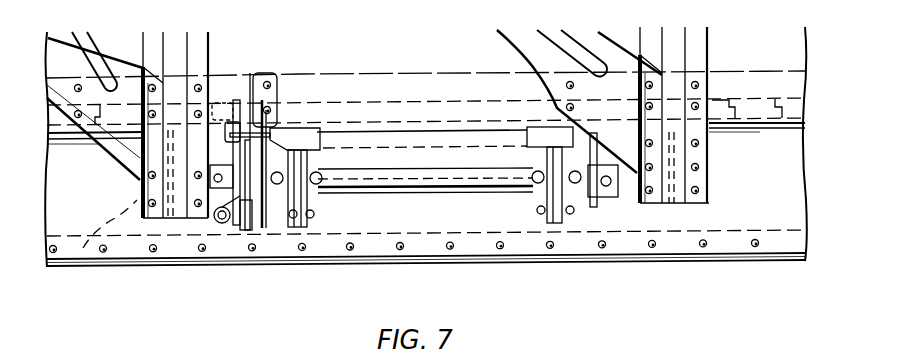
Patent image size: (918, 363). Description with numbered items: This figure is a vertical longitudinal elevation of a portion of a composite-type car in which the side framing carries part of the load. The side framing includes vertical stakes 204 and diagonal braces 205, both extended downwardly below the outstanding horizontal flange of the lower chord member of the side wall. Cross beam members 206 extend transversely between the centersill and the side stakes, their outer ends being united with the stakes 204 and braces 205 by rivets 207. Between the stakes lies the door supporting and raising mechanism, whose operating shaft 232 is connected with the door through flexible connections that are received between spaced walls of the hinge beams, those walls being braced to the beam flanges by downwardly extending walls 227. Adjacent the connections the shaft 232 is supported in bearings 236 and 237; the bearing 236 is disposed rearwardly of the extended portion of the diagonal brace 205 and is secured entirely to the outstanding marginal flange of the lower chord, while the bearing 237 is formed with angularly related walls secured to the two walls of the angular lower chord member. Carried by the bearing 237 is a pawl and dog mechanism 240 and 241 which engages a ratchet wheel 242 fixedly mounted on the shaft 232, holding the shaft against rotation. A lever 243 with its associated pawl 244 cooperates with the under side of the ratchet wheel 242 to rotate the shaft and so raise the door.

The vertical stake 204 is at (197, 52).
The diagonal brace 205 is at (107, 44).
The cross beam member 206 is at (80, 250).
The rivet 207 is at (138, 130).
The downwardly extending wall 227 is at (262, 0).
The operating shaft 232 is at (430, 183).
The bearing 236 is at (597, 205).
The bearing 237 is at (262, 228).
The pawl mechanism 240 is at (212, 214).
The dog mechanism 241 is at (235, 105).
The ratchet wheel 242 is at (253, 237).
The lever 243 is at (218, 228).
The pawl 244 is at (242, 238).